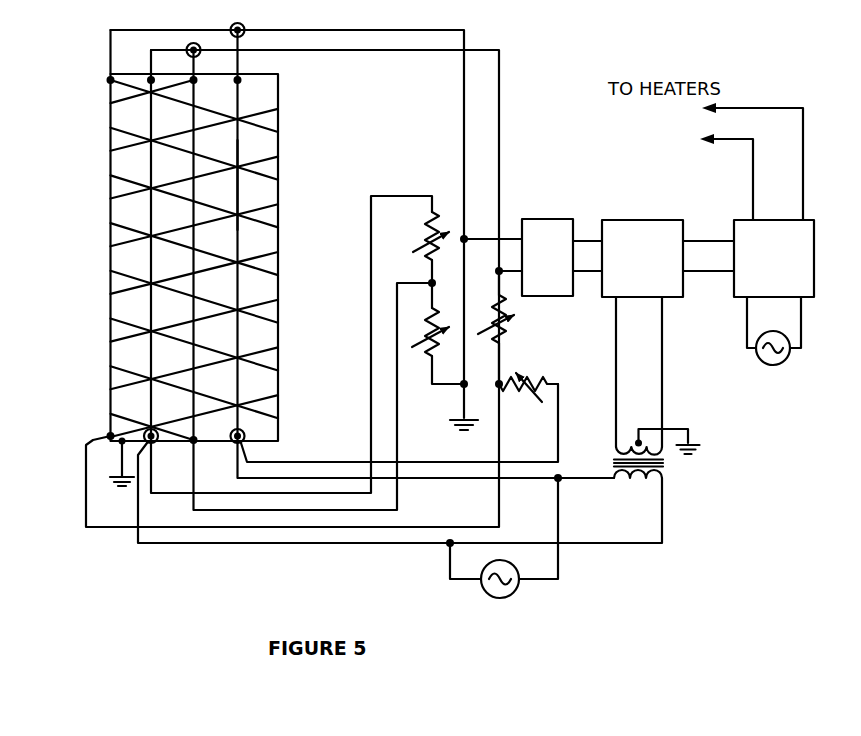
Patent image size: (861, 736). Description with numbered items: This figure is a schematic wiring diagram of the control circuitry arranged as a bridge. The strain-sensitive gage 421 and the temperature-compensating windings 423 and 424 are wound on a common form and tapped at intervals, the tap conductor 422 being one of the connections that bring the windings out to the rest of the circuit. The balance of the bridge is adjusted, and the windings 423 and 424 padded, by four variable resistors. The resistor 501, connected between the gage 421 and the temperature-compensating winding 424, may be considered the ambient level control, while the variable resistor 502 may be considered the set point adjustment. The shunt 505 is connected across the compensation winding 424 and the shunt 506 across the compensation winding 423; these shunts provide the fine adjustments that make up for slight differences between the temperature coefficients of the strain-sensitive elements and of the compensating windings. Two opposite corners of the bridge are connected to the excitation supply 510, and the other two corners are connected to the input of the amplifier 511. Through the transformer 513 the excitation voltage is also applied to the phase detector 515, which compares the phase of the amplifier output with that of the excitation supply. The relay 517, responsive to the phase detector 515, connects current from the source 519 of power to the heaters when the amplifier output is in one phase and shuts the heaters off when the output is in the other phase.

The gage 421 is at (150, 215).
The tap conductor 422 is at (240, 186).
The temperature-compensating winding 423 is at (261, 161).
The temperature-compensating winding 424 is at (263, 175).
The variable resistor 501 is at (424, 246).
The variable resistor 502 is at (538, 378).
The shunt 505 is at (425, 345).
The shunt 506 is at (502, 334).
The excitation supply 510 is at (514, 593).
The amplifier 511 is at (537, 219).
The transformer 513 is at (663, 462).
The phase detector 515 is at (628, 220).
The relay 517 is at (814, 233).
The source of power 519 is at (786, 361).